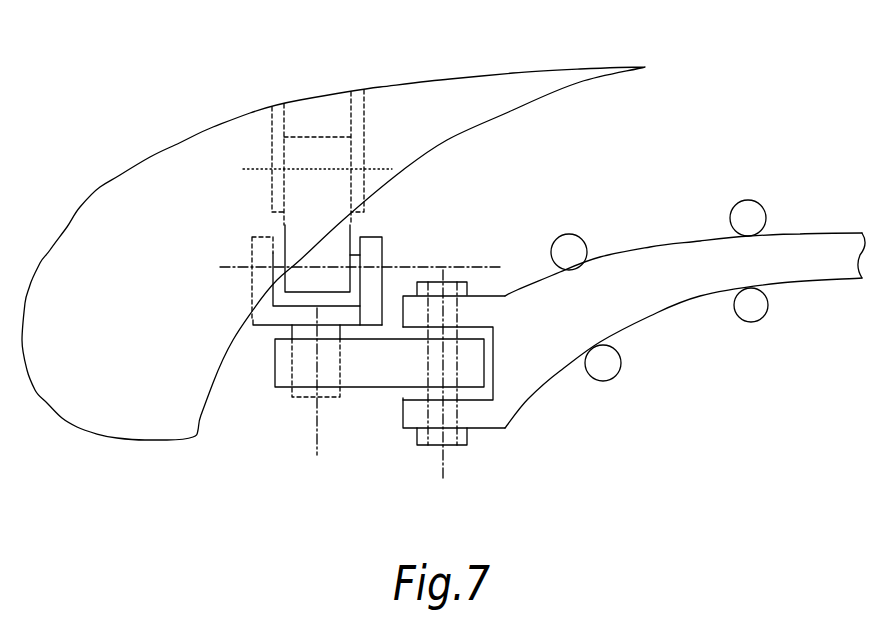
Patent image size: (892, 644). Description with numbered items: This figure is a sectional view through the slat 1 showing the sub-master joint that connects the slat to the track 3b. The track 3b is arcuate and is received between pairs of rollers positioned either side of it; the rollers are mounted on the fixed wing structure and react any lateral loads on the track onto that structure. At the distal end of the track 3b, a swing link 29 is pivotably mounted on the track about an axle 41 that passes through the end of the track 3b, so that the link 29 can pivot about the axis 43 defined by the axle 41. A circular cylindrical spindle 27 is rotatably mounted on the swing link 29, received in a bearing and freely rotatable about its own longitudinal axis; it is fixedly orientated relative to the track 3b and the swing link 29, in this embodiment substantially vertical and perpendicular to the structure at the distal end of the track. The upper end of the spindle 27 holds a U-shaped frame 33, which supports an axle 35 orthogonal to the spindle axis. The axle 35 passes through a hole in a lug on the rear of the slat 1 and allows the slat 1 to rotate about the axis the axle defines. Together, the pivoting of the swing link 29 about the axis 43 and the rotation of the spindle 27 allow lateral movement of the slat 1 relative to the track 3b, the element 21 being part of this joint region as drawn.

The slat 1 is at (437, 93).
The guide plate 21 is at (490, 273).
The spindle 27 is at (303, 395).
The swing link 29 is at (375, 365).
The U-shaped frame 33 is at (263, 238).
The axle 35 is at (240, 265).
The axle 41 is at (421, 440).
The axis 43 is at (445, 460).
The track 3b is at (797, 262).